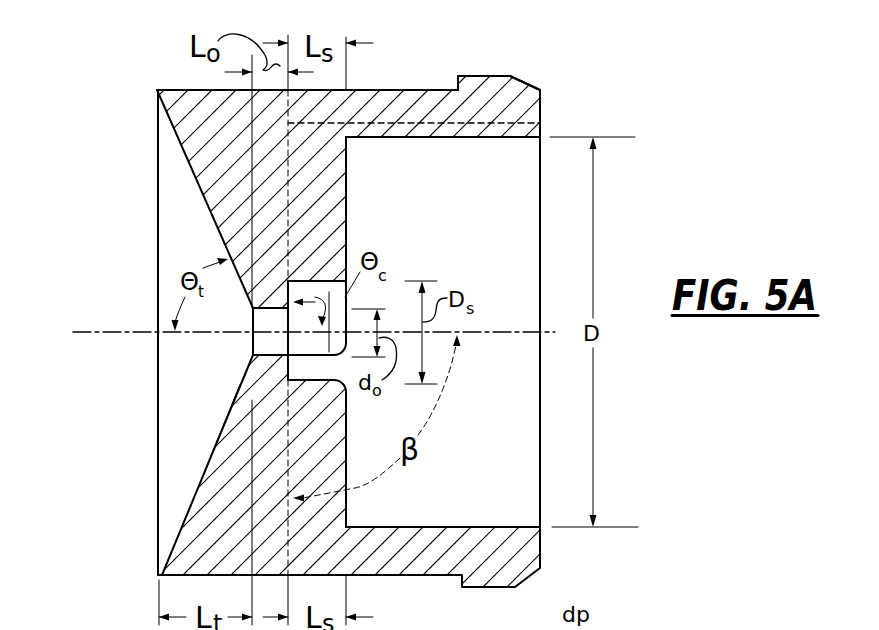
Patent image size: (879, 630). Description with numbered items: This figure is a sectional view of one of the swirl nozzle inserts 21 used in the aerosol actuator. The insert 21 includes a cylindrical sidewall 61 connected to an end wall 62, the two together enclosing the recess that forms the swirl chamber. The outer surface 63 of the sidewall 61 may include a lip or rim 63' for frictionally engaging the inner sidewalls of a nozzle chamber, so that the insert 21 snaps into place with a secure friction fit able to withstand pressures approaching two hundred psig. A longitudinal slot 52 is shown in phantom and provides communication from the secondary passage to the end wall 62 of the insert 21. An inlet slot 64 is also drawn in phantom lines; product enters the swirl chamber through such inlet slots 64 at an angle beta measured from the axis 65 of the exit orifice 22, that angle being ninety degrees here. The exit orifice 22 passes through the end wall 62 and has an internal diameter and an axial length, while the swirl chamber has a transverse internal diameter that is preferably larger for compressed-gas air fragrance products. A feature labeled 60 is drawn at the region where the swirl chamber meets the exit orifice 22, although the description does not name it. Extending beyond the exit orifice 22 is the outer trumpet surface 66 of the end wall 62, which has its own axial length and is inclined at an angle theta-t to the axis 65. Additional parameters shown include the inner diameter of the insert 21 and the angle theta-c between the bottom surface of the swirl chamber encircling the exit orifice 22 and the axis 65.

The swirl nozzle insert 21 is at (110, 236).
The exit orifice 22 is at (250, 356).
The longitudinal slot 52 is at (477, 128).
The exit counterbore edge 60 is at (326, 288).
The cylindrical sidewall 61 is at (402, 100).
The end wall 62 is at (197, 135).
The outer surface 63 is at (466, 130).
The lip or rim 63' is at (552, 82).
The inlet slot 64 is at (290, 398).
The axis 65 is at (107, 333).
The outer trumpet surface 66 is at (187, 170).